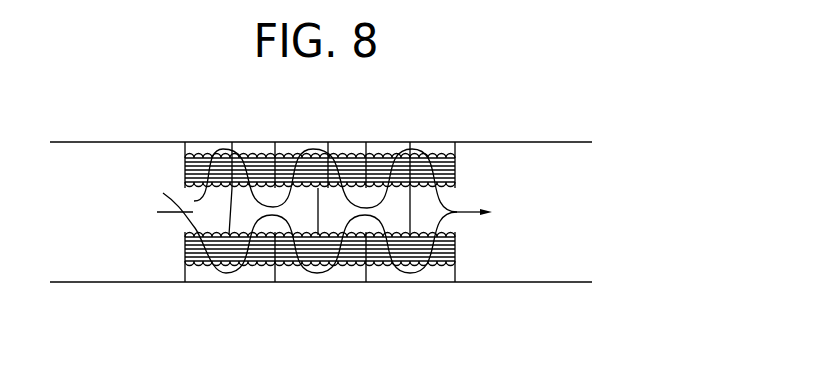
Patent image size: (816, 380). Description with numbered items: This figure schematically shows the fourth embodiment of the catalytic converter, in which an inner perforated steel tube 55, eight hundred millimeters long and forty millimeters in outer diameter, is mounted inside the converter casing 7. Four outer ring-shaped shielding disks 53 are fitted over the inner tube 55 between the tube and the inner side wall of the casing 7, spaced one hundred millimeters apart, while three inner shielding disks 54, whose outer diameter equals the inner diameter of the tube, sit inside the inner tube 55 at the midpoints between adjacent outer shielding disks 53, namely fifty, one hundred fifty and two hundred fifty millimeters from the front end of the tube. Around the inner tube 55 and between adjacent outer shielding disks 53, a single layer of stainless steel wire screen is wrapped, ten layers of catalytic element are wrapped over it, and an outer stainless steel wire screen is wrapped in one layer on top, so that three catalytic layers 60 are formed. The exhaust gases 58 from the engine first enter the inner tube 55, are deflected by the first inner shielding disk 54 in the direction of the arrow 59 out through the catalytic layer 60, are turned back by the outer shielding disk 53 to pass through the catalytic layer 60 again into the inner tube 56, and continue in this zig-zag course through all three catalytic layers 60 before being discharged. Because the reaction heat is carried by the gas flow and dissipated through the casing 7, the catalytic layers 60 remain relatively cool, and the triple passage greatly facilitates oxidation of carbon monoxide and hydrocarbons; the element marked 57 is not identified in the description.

The converter casing 7 is at (93, 142).
The outer ring-shaped shielding disk 53 is at (188, 143).
The inner shielding disk 54 is at (229, 267).
The inner perforated steel tube 55 is at (194, 201).
The inner tube 56 is at (290, 178).
The scalloped facing layer 57 is at (257, 270).
The exhaust gases 58 is at (95, 212).
The arrow 59 is at (191, 214).
The catalytic layer 60 is at (232, 144).